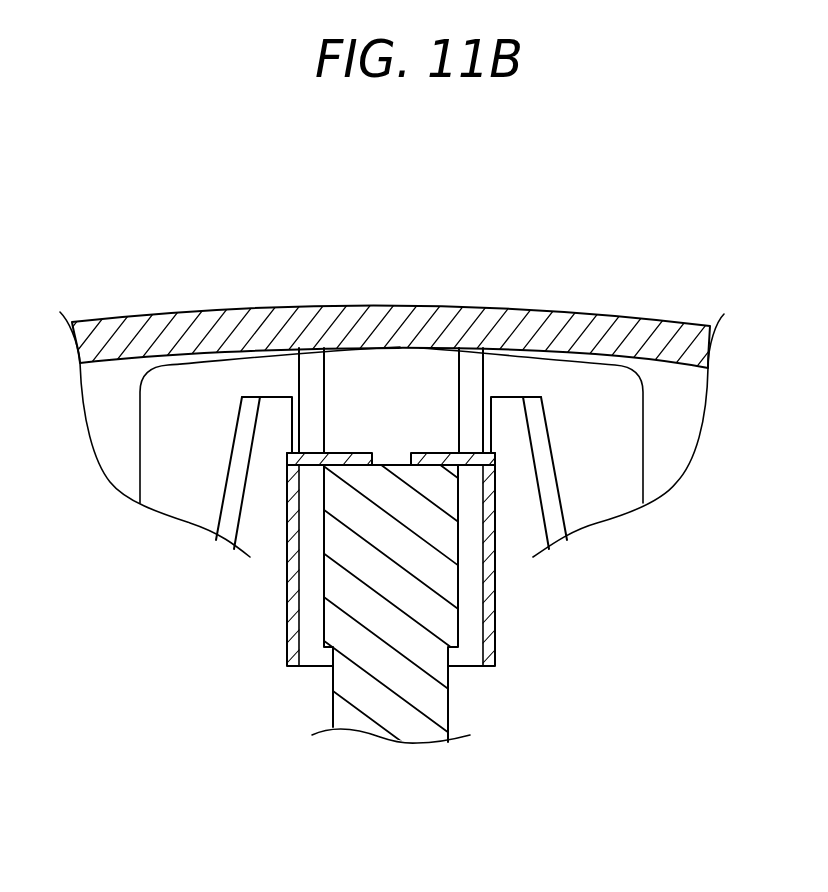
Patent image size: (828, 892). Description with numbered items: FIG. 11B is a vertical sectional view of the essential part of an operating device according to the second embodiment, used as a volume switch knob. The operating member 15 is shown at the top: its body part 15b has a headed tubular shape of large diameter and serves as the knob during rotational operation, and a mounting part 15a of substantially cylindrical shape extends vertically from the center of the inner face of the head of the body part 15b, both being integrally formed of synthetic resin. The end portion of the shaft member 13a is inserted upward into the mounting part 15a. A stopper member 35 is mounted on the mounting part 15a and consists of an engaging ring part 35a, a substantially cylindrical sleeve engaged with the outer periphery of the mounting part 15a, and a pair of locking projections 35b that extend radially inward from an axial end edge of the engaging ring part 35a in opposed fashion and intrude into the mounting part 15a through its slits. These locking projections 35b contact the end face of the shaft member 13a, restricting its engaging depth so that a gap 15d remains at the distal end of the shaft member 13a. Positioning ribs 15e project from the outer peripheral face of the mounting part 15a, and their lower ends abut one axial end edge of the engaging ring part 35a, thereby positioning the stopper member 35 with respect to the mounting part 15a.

The operating member 15 is at (680, 310).
The mounting part 15a is at (310, 421).
The body part 15b is at (697, 346).
The gap 15d is at (438, 372).
The positioning ribs 15e is at (490, 422).
The stopper member 35 is at (518, 574).
The engaging ring part 35a is at (493, 527).
The locking projections 35b is at (430, 453).
The shaft member 13a is at (362, 575).